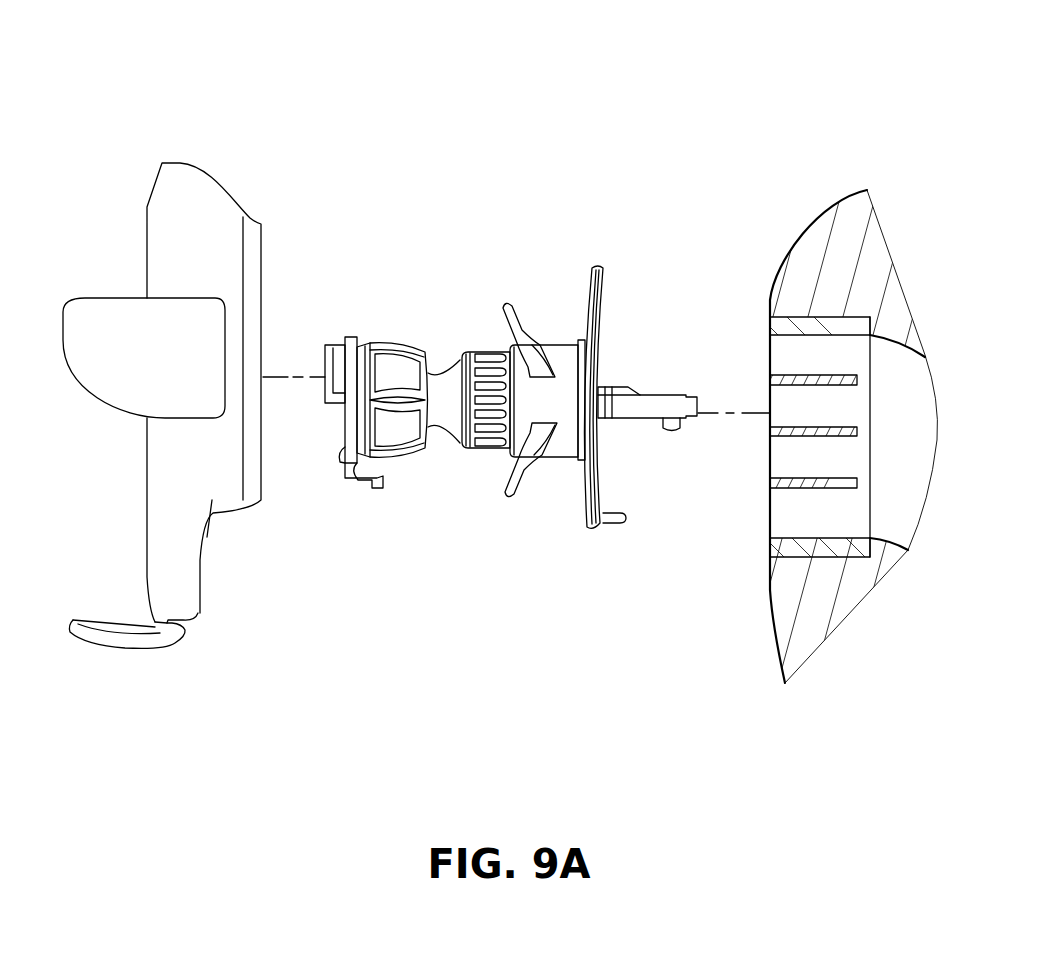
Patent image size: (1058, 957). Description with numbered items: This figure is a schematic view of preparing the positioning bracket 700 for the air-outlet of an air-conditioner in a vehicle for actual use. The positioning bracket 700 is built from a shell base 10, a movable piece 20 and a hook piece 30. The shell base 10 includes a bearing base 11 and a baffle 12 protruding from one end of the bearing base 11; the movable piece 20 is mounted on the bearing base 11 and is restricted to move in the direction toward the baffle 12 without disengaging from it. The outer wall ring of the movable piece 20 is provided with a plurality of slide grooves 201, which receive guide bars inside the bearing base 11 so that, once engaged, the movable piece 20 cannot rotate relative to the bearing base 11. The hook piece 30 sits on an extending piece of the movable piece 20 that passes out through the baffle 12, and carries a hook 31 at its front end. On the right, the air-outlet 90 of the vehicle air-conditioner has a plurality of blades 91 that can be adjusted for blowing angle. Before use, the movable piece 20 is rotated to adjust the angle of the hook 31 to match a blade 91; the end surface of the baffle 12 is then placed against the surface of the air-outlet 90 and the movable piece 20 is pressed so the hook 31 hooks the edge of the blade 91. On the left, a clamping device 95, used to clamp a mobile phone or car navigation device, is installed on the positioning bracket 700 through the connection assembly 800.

The clamping device 95 is at (210, 217).
The connection assembly 800 is at (345, 318).
The movable piece 20 is at (475, 393).
The slide grooves 201 is at (490, 367).
The positioning bracket 700 is at (564, 416).
The shell base 10 is at (564, 465).
The bearing base 11 is at (558, 447).
The baffle 12 is at (587, 528).
The hook piece 30 is at (647, 398).
The hook 31 is at (670, 431).
The air-outlet 90 is at (779, 433).
The blades 91 is at (813, 482).